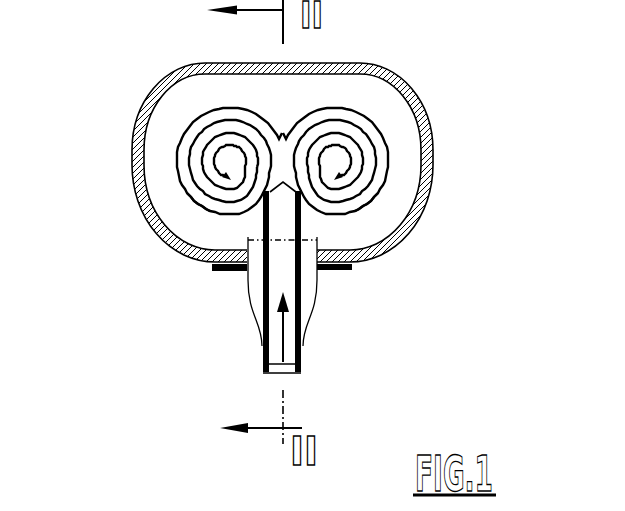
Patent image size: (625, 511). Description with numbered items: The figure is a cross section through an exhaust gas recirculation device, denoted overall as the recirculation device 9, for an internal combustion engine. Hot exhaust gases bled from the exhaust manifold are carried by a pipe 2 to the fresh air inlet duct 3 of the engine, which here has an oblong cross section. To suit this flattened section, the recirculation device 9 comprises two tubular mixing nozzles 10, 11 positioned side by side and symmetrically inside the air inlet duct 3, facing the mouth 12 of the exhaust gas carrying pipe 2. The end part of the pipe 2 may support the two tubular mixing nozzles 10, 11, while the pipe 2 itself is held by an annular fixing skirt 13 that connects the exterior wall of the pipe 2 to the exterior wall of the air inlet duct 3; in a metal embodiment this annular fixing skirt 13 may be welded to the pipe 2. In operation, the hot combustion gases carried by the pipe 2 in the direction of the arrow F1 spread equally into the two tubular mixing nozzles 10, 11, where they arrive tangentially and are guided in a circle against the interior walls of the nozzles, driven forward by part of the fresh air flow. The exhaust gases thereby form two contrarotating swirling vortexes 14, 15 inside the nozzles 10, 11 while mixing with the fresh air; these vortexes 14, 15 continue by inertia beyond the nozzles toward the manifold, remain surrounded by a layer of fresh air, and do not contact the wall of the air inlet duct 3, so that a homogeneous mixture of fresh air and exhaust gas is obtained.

The pipe 2 is at (262, 368).
The fresh air inlet duct 3 is at (433, 138).
The recirculation device 9 is at (192, 108).
The tubular mixing nozzle 10 is at (382, 192).
The tubular mixing nozzle 11 is at (192, 193).
The mouth 12 is at (303, 217).
The annular fixing skirt 13 is at (320, 313).
The swirling vortex 14 is at (358, 114).
The swirling vortex 15 is at (205, 153).
The arrow F1 is at (257, 343).